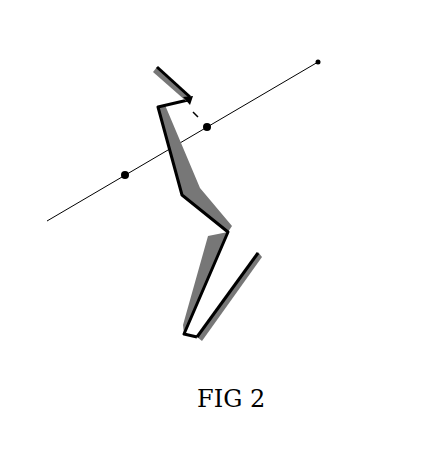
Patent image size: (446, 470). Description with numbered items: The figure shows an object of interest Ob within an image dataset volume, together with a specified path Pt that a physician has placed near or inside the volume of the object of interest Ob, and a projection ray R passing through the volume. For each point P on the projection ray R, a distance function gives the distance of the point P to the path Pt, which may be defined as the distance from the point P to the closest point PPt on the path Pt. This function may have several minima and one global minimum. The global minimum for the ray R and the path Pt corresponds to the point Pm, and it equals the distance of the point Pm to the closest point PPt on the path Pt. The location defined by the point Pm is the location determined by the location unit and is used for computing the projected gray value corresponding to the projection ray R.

The projection ray R is at (193, 141).
The object of interest Ob is at (203, 262).
The specified path Pt is at (248, 277).
The closest point on the path PPt is at (191, 96).
The point on the projection ray P is at (122, 174).
The point of global minimum distance Pm is at (211, 128).